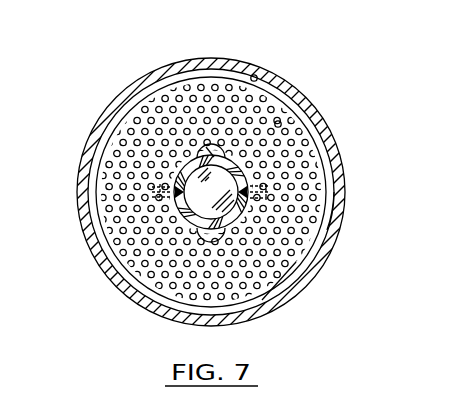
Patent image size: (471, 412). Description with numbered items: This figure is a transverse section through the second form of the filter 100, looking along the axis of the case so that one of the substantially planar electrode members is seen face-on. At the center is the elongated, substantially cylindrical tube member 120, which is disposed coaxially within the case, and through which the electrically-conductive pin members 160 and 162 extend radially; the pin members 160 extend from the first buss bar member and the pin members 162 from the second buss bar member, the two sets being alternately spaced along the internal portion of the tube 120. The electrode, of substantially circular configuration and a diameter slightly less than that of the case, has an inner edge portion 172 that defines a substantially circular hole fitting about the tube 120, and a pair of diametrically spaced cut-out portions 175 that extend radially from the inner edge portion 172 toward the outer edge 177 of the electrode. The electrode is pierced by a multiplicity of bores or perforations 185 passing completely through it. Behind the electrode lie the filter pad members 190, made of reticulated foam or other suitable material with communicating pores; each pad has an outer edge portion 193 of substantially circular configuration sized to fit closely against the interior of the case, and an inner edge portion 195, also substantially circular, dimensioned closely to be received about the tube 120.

The filter 100 is at (125, 66).
The tube member 120 is at (195, 180).
The pin members 160 is at (165, 191).
The pin members 162 is at (283, 170).
The inner edge portion 172 is at (185, 206).
The cut-out portions 175 is at (214, 148).
The outer edge 177 is at (275, 292).
The perforations 185 is at (277, 121).
The filter pad members 190 is at (330, 197).
The outer edge portion 193 is at (320, 228).
The inner edge portion 195 is at (218, 150).